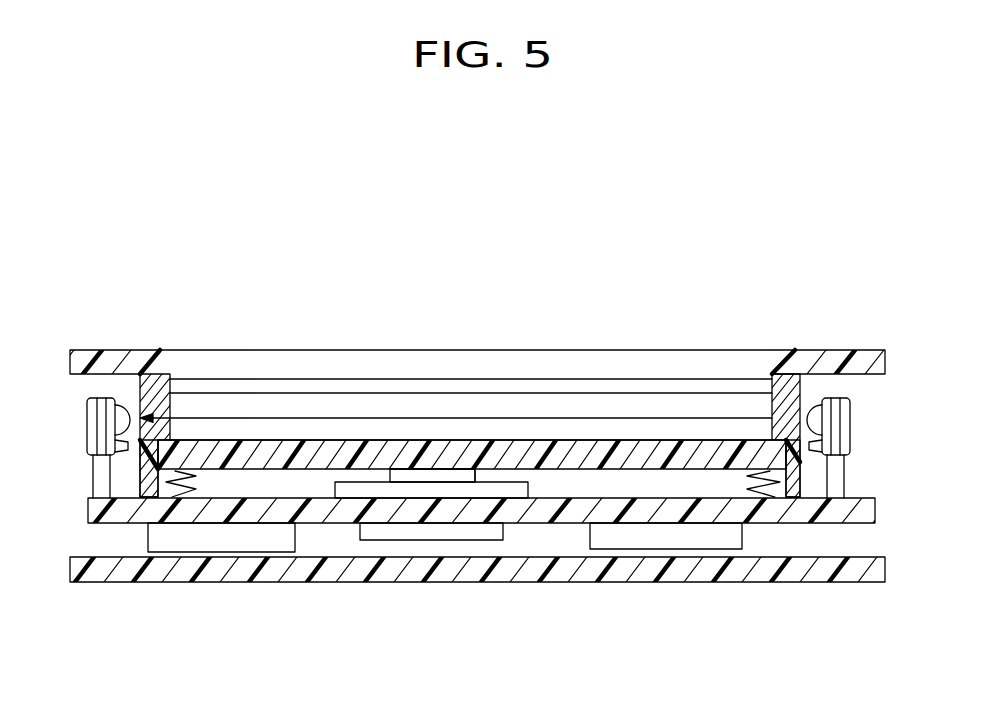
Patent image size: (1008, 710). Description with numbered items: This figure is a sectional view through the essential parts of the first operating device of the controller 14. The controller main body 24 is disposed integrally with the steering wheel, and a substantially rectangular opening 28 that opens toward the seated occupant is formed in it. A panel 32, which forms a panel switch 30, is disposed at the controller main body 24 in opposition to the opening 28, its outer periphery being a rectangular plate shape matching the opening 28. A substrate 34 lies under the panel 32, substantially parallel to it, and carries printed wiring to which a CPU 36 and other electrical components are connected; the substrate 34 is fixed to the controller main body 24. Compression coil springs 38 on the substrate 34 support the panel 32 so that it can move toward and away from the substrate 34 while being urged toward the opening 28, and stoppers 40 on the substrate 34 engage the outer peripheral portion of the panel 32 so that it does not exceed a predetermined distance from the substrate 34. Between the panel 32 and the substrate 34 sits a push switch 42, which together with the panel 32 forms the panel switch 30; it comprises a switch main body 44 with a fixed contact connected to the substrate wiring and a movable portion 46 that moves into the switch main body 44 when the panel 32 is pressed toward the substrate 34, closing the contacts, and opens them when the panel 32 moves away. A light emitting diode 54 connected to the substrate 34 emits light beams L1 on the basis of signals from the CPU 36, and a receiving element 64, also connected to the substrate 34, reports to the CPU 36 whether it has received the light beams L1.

The controller 14 is at (472, 244).
The controller main body 24 is at (95, 340).
The opening 28 is at (172, 388).
The panel switch 30 is at (305, 427).
The panel 32 is at (338, 439).
The substrate 34 is at (567, 523).
The CPU 36 is at (456, 540).
The compression coil springs 38 is at (200, 479).
The stoppers 40 is at (140, 462).
The push switch 42 is at (512, 460).
The switch main body 44 is at (382, 482).
The movable portion 46 is at (443, 470).
The light emitting diode 54 is at (850, 420).
The receiving element 64 is at (87, 416).
The light beams L1 is at (613, 393).